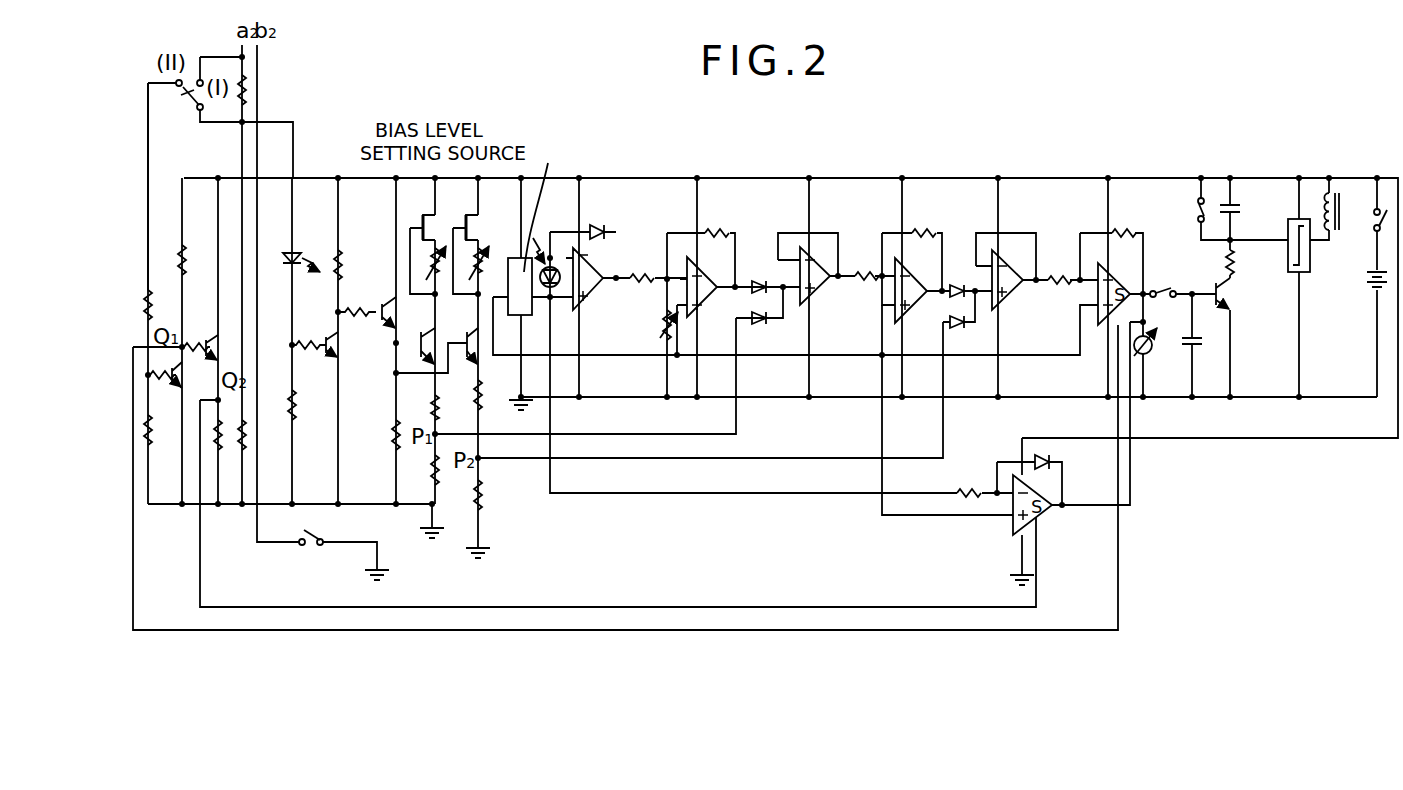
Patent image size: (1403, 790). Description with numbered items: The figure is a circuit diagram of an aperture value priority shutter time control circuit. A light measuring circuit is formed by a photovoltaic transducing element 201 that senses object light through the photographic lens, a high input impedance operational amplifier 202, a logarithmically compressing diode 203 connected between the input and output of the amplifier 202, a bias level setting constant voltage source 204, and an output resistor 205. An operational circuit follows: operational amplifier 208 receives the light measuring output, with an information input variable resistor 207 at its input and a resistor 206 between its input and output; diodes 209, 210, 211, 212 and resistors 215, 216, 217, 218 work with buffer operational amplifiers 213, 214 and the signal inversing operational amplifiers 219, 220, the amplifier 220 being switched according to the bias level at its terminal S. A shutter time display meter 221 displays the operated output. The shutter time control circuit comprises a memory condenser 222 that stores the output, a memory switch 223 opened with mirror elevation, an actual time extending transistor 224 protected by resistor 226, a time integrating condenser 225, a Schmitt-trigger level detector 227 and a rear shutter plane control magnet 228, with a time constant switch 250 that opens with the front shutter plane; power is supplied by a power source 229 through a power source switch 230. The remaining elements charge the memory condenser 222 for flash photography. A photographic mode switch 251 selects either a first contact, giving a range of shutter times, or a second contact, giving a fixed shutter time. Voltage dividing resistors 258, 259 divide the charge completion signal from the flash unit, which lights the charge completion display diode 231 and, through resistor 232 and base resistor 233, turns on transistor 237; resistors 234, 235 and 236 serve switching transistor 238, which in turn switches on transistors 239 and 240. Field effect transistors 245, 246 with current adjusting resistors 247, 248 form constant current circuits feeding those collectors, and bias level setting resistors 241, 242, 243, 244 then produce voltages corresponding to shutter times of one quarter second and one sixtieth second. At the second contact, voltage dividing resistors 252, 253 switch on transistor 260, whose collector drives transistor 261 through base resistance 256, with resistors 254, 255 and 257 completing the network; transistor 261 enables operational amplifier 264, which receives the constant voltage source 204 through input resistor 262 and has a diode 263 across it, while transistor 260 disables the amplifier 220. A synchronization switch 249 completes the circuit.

The photo voltaic transducing element 201 is at (553, 266).
The high input impedance operational amplifier 202 is at (588, 300).
The logarithmically compressing element 203 is at (598, 227).
The bias level setting constant voltage source 204 is at (512, 270).
The resistor 205 is at (648, 268).
The resistor 206 is at (726, 221).
The information input variable resistor 207 is at (672, 322).
The operational amplifier 208 is at (700, 304).
The diode 209 is at (769, 275).
The diode 210 is at (763, 329).
The diode 211 is at (966, 277).
The diode 212 is at (971, 332).
The buffer operational amplifier 213 is at (810, 296).
The buffer operational amplifier 214 is at (1004, 300).
The resistor 215 is at (871, 265).
The resistor 216 is at (933, 221).
The resistor 217 is at (1067, 269).
The resistor 218 is at (1131, 221).
The signal inversing operational amplifier 219 is at (906, 304).
The signal inversing operational amplifier 220 is at (1095, 290).
The shutter time display meter 221 is at (1145, 351).
The memory condenser 222 is at (1198, 344).
The memory switch 223 is at (1172, 279).
The actual time extending transistor 224 is at (1226, 296).
The time integrating condenser 225 is at (1235, 209).
The protection resistor 226 is at (1254, 262).
The level detector 227 is at (1308, 272).
The rear shutter plane control magnet 228 is at (1343, 205).
The power source 229 is at (1374, 288).
The power source switch 230 is at (1373, 230).
The charge completion display diode 231 is at (288, 252).
The resistor 232 is at (315, 405).
The base resistor 233 is at (316, 335).
The resistor 234 is at (360, 265).
The resistor 235 is at (364, 302).
The resistor 236 is at (383, 432).
The transistor 237 is at (334, 357).
The switching transistor 238 is at (392, 322).
The transistor 239 is at (428, 352).
The transistor 240 is at (470, 352).
The bias level setting resistor 241 is at (429, 404).
The bias level setting resistor 242 is at (421, 472).
The bias level setting resistor 243 is at (469, 394).
The bias level setting resistor 244 is at (500, 495).
The field effect transistor 245 is at (430, 232).
The field effect transistor 246 is at (472, 232).
The current adjusting resistor 247 is at (430, 275).
The current adjusting resistor 248 is at (474, 275).
The synchronization switch 249 is at (319, 549).
The time constant switch 250 is at (1197, 206).
The photographic mode switch 251 is at (188, 100).
The voltage dividing resistor 252 is at (150, 290).
The voltage dividing resistor 253 is at (152, 432).
The resistor 254 is at (160, 380).
The resistor 255 is at (204, 261).
The base resistance 256 is at (170, 307).
The resistor 257 is at (222, 438).
The voltage dividing resistor 258 is at (246, 435).
The voltage dividing resistor 259 is at (247, 92).
The transistor 260 is at (175, 376).
The transistor 261 is at (196, 345).
The input resistor 262 is at (976, 481).
The diode 263 is at (1050, 460).
The operational amplifier 264 is at (1012, 515).